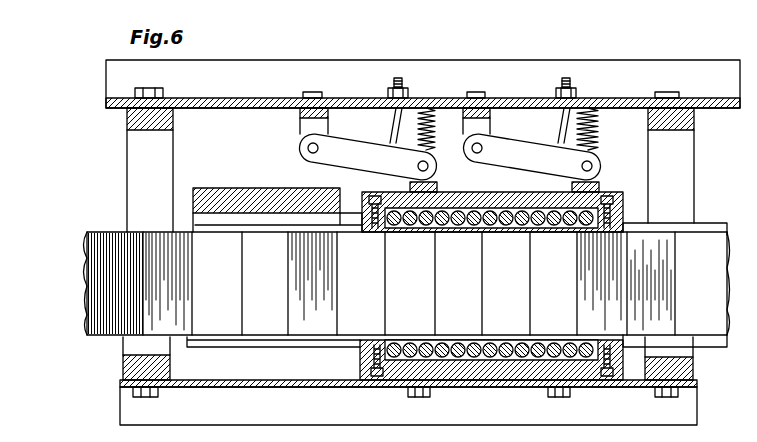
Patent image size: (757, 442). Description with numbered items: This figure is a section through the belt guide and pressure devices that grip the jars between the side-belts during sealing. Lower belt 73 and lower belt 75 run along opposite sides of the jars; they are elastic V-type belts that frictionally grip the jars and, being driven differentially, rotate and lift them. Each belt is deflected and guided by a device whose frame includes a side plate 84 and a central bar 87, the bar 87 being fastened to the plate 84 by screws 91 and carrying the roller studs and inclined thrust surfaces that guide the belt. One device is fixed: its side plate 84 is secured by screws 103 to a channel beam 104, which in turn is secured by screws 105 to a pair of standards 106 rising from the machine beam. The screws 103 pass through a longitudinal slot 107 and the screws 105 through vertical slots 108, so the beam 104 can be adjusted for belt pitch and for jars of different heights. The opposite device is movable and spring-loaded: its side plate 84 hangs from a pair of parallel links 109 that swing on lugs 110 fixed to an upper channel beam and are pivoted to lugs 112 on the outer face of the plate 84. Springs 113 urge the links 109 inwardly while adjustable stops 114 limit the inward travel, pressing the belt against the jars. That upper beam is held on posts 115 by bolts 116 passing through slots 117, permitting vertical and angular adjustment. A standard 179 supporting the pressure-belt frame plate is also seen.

The lower endless V-type belt 73 is at (695, 235).
The lower endless V-type belt 75 is at (685, 338).
The side plate 84 is at (505, 198).
The central bar 87 is at (512, 233).
The screws 91 is at (377, 195).
The screws 103 is at (547, 393).
The channel beam 104 is at (265, 386).
The screws 105 is at (158, 396).
The standards 106 is at (172, 369).
The longitudinal slot 107 is at (380, 386).
The vertical slots 108 is at (122, 385).
The parallel links 109 is at (450, 157).
The lugs 110 is at (299, 129).
The lugs 112 is at (440, 187).
The springs 113 is at (438, 110).
The adjustable stops 114 is at (406, 88).
The posts 115 is at (127, 118).
The bolts 116 is at (156, 88).
The slots 117 is at (236, 99).
The standard 179 is at (222, 188).